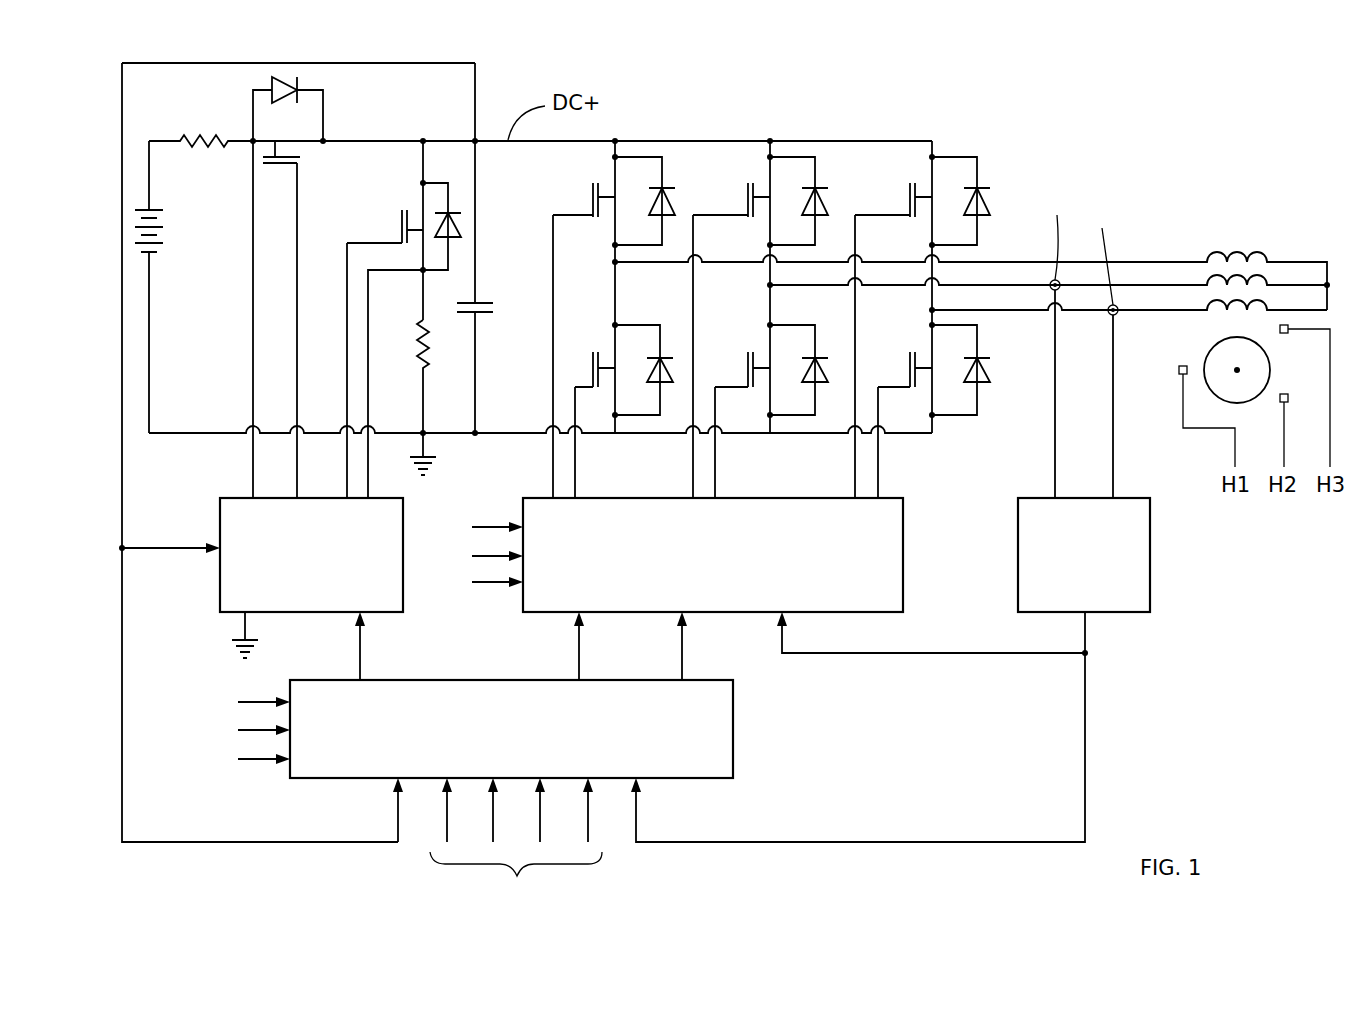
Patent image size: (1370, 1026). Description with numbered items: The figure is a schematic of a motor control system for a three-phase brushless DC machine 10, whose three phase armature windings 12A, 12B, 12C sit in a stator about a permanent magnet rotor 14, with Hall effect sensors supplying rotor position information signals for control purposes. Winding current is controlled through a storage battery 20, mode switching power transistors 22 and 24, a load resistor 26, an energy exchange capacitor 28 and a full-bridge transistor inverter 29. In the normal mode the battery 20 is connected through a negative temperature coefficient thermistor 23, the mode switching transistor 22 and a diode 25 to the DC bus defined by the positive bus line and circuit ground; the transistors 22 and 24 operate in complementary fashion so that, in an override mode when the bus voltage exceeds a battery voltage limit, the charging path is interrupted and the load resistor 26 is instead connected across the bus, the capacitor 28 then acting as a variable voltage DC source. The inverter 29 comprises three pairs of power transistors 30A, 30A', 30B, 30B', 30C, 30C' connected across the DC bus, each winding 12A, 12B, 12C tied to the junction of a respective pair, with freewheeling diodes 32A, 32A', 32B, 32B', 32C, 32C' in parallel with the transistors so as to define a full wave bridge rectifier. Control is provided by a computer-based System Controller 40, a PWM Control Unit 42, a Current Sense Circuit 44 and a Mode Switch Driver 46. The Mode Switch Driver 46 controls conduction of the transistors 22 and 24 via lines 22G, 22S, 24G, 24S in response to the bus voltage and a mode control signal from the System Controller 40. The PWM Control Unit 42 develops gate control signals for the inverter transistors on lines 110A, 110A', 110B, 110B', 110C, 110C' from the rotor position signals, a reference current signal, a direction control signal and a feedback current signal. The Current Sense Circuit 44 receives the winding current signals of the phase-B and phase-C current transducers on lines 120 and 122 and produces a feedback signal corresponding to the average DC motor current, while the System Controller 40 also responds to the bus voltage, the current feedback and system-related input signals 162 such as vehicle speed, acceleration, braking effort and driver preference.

The three-phase brushless DC machine 10 is at (1112, 173).
The phase armature winding 12A is at (1243, 252).
The phase armature winding 12B is at (1210, 282).
The phase armature winding 12C is at (1233, 316).
The permanent magnet rotor 14 is at (1212, 363).
The storage battery 20 is at (152, 258).
The mode switching power transistor 22 is at (265, 160).
The line 22G is at (297, 468).
The line 22S is at (253, 478).
The negative temperature coefficient thermistor 23 is at (200, 136).
The mode switching power transistor 24 is at (400, 215).
The line 24S is at (372, 337).
The line 24G is at (348, 360).
The diode 25 is at (270, 86).
The load resistor 26 is at (430, 352).
The energy exchange capacitor 28 is at (480, 300).
The full-bridge transistor inverter 29 is at (735, 118).
The power transistor 30A is at (584, 235).
The power transistor 30A' is at (586, 340).
The power transistor 30B is at (731, 220).
The power transistor 30B' is at (736, 347).
The power transistor 30C is at (893, 156).
The power transistor 30C' is at (898, 350).
The freewheeling diode 32A is at (670, 200).
The freewheeling diode 32A' is at (648, 354).
The freewheeling diode 32B is at (824, 196).
The freewheeling diode 32B' is at (807, 355).
The freewheeling diode 32C is at (993, 198).
The freewheeling diode 32C' is at (987, 364).
The System Controller 40 is at (707, 740).
The PWM Control Unit 42 is at (875, 557).
The Current Sense Circuit 44 is at (1140, 548).
The Mode Switch Driver 46 is at (230, 597).
The line 110A is at (613, 356).
The line 110A' is at (626, 442).
The line 110B is at (754, 356).
The line 110B' is at (769, 442).
The line 110C is at (925, 356).
The line 110C' is at (937, 442).
The line 120 is at (1057, 465).
The line 122 is at (1115, 460).
The system-related input signals 162 is at (517, 876).